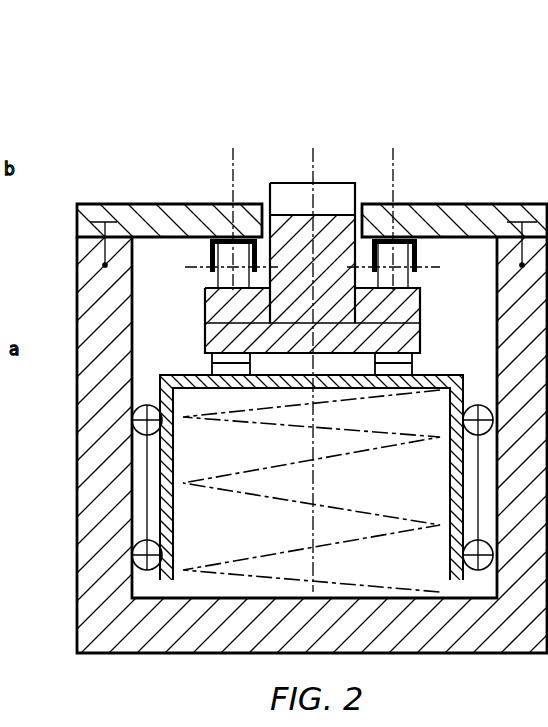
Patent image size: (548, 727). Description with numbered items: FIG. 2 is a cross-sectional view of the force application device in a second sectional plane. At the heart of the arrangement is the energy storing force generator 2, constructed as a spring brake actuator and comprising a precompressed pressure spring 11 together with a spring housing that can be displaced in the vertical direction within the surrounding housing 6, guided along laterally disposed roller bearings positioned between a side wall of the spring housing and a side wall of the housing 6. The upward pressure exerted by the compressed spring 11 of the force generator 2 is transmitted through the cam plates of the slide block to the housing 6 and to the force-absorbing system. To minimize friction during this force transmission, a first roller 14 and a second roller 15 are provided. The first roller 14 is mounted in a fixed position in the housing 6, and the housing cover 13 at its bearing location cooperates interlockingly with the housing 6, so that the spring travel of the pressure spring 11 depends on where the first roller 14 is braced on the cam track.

The energy storing force generator 2 is at (148, 497).
The housing 6 is at (88, 610).
The pressure spring 11 is at (347, 457).
The housing cover 13 is at (465, 224).
The first roller 14 is at (402, 255).
The second roller 15 is at (332, 193).